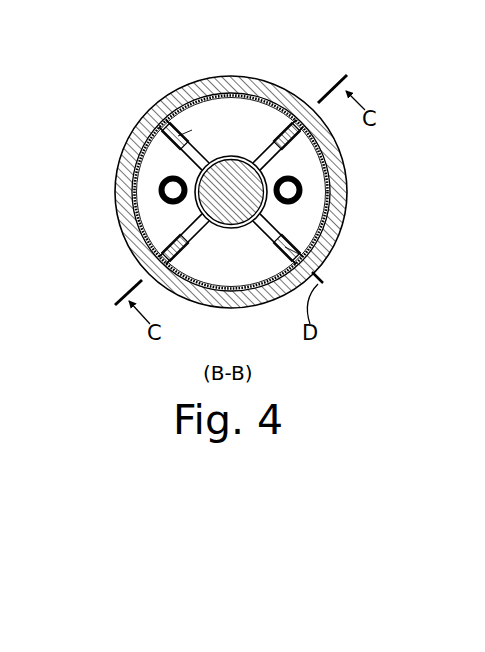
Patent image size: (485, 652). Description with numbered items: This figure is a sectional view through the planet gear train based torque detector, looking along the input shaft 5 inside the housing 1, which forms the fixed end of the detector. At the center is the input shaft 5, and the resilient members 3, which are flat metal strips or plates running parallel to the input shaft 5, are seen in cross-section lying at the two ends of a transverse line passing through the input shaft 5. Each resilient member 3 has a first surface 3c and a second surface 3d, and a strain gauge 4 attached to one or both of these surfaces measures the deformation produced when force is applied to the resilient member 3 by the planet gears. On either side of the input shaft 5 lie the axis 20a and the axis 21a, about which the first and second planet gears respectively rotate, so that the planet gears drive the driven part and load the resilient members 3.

The housing 1 is at (341, 166).
The resilient member 3 is at (127, 168).
The first surface 3c is at (184, 112).
The second surface 3d is at (163, 152).
The strain gauge 4 is at (197, 121).
The input shaft 5 is at (234, 153).
The axis 20a is at (165, 191).
The axis 21a is at (300, 194).